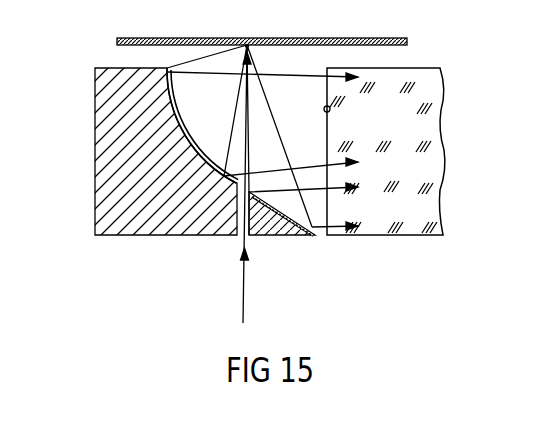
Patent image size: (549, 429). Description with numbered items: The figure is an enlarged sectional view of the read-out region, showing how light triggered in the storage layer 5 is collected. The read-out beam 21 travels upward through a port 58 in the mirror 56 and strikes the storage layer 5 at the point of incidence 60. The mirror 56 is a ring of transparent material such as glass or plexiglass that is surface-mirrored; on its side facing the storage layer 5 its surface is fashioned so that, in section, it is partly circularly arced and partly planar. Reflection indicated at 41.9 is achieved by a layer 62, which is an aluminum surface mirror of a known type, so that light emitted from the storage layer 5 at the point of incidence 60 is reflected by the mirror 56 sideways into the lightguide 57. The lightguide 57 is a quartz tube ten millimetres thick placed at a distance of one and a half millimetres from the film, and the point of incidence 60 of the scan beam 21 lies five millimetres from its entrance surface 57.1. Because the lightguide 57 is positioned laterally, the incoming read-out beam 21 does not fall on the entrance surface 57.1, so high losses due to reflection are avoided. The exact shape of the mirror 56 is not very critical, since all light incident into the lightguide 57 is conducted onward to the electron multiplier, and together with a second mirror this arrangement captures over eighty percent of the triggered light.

The storage layer 5 is at (399, 47).
The point of incidence 60 is at (254, 50).
The layer 62 is at (176, 111).
The mirror 56 is at (135, 221).
The port 58 is at (241, 216).
The reflection 41.9 is at (312, 222).
The entrance surface 57.1 is at (330, 109).
The lightguide 57 is at (389, 228).
The read-out beam 21 is at (244, 292).